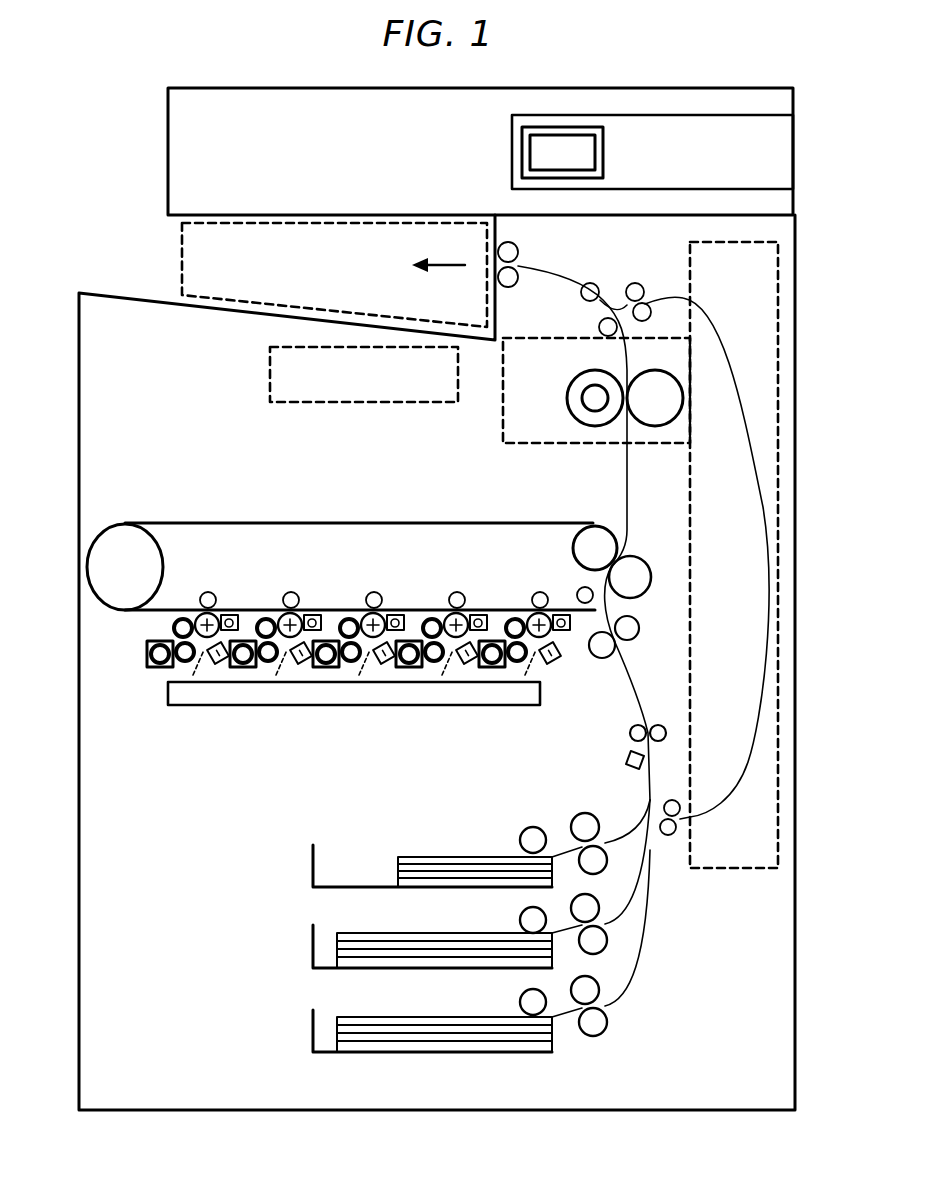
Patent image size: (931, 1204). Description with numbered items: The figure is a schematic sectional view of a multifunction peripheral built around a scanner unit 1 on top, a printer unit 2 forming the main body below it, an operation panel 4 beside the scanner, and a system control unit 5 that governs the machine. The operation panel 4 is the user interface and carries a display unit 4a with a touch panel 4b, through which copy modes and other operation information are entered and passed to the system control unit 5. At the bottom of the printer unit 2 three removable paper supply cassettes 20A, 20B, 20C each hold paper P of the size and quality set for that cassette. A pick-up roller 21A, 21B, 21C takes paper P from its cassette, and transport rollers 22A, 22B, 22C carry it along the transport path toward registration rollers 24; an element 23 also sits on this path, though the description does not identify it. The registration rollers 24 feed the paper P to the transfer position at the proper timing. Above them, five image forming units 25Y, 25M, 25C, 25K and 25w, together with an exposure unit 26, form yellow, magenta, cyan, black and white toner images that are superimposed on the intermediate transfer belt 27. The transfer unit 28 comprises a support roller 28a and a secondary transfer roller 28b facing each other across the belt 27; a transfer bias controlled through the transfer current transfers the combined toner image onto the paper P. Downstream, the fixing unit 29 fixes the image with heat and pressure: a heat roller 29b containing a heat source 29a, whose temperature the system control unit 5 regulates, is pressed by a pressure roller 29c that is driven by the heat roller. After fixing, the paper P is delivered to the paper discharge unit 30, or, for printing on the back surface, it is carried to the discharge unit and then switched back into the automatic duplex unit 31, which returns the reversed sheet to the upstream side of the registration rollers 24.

The scanner unit 1 is at (169, 152).
The printer unit 2 is at (79, 451).
The operation panel 4 is at (793, 152).
The display unit 4a is at (530, 172).
The touch panel 4b is at (522, 142).
The system control unit 5 is at (270, 377).
The paper discharge unit 30 is at (182, 262).
The automatic duplex unit 31 is at (778, 327).
The fixing unit 29 is at (596, 398).
The heat source 29a is at (595, 392).
The heat roller 29b is at (590, 425).
The pressure roller 29c is at (655, 425).
The intermediate transfer belt 27 is at (412, 522).
The transfer unit 28 is at (631, 557).
The support roller 28a is at (605, 535).
The secondary transfer roller 28b is at (638, 592).
The exposure unit 26 is at (255, 695).
The image forming unit 25Y is at (222, 597).
The image forming unit 25M is at (305, 597).
The image forming unit 25C is at (388, 597).
The image forming unit 25K is at (471, 597).
The image forming unit 25w is at (556, 597).
The registration rollers 24 is at (630, 642).
The paper sensor 23 is at (630, 753).
The transport rollers 22A is at (602, 848).
The transport rollers 22B is at (600, 905).
The transport rollers 22C is at (600, 987).
The pick-up roller 21A is at (520, 839).
The pick-up roller 21B is at (520, 919).
The pick-up roller 21C is at (520, 1001).
The paper supply cassette 20A is at (313, 868).
The paper supply cassette 20B is at (313, 950).
The paper supply cassette 20C is at (313, 1033).
The paper P is at (422, 849).